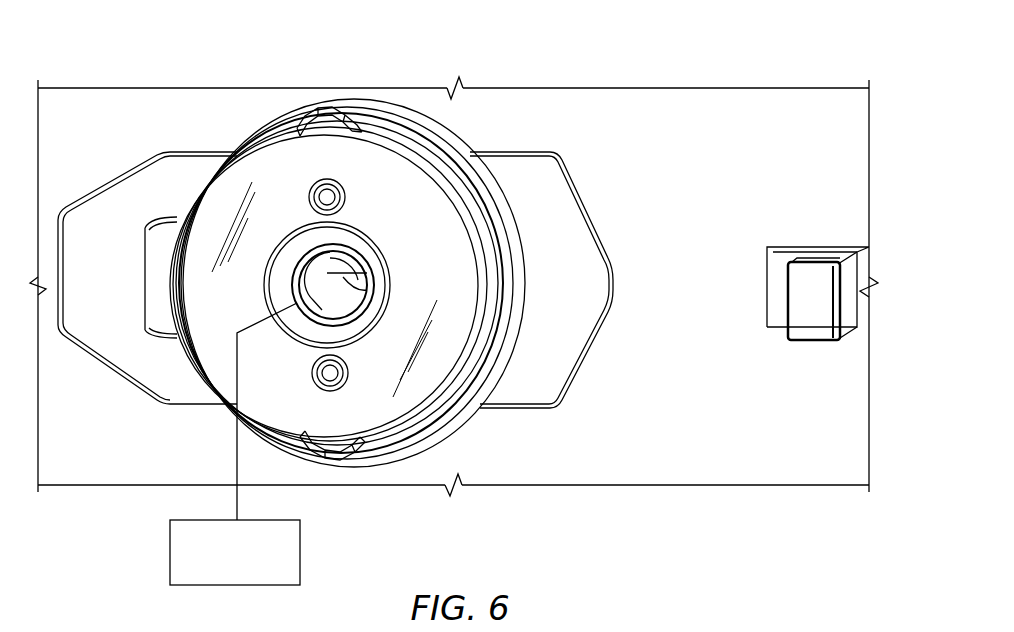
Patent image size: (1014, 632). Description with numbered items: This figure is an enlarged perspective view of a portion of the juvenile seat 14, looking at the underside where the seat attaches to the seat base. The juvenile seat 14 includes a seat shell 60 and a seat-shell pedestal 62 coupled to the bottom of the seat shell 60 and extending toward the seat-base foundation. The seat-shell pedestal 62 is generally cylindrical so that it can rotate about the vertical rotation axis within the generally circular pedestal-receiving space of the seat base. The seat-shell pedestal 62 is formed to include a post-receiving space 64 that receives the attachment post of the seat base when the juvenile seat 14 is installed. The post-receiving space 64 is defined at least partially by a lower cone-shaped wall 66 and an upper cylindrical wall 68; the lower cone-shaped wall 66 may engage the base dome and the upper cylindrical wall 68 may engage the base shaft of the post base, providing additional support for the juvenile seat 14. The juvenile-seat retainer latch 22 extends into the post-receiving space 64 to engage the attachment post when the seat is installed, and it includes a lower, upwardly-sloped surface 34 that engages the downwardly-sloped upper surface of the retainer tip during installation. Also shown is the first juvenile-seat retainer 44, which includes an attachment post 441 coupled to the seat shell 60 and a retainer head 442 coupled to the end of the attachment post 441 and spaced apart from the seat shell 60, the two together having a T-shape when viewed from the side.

The juvenile seat 14 is at (552, 63).
The juvenile-seat retainer latch 22 is at (165, 548).
The lower, upwardly-sloped surface 34 is at (325, 258).
The first juvenile-seat retainer 44 is at (811, 341).
The seat shell 60 is at (92, 103).
The seat-shell pedestal 62 is at (398, 104).
The post-receiving space 64 is at (361, 320).
The lower cone-shaped wall 66 is at (283, 283).
The upper cylindrical wall 68 is at (341, 270).
The attachment post 441 is at (818, 262).
The retainer head 442 is at (840, 298).